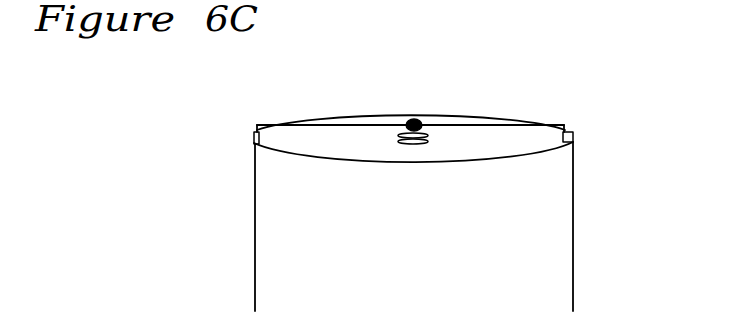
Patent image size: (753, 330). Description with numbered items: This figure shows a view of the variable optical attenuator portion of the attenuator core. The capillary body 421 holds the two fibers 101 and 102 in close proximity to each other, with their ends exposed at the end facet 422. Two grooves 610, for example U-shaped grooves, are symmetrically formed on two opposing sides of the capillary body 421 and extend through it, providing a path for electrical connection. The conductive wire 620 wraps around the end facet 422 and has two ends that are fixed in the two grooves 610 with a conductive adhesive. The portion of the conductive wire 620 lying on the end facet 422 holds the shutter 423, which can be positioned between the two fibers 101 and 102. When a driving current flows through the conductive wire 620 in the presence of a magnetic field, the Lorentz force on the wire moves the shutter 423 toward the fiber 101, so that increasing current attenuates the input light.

The capillary body 421 is at (291, 232).
The end facet 422 is at (297, 146).
The shutter 423 is at (415, 118).
The grooves 610 is at (254, 136).
The conductive wire 620 is at (343, 124).
The fiber 101 is at (430, 136).
The fiber 102 is at (428, 143).